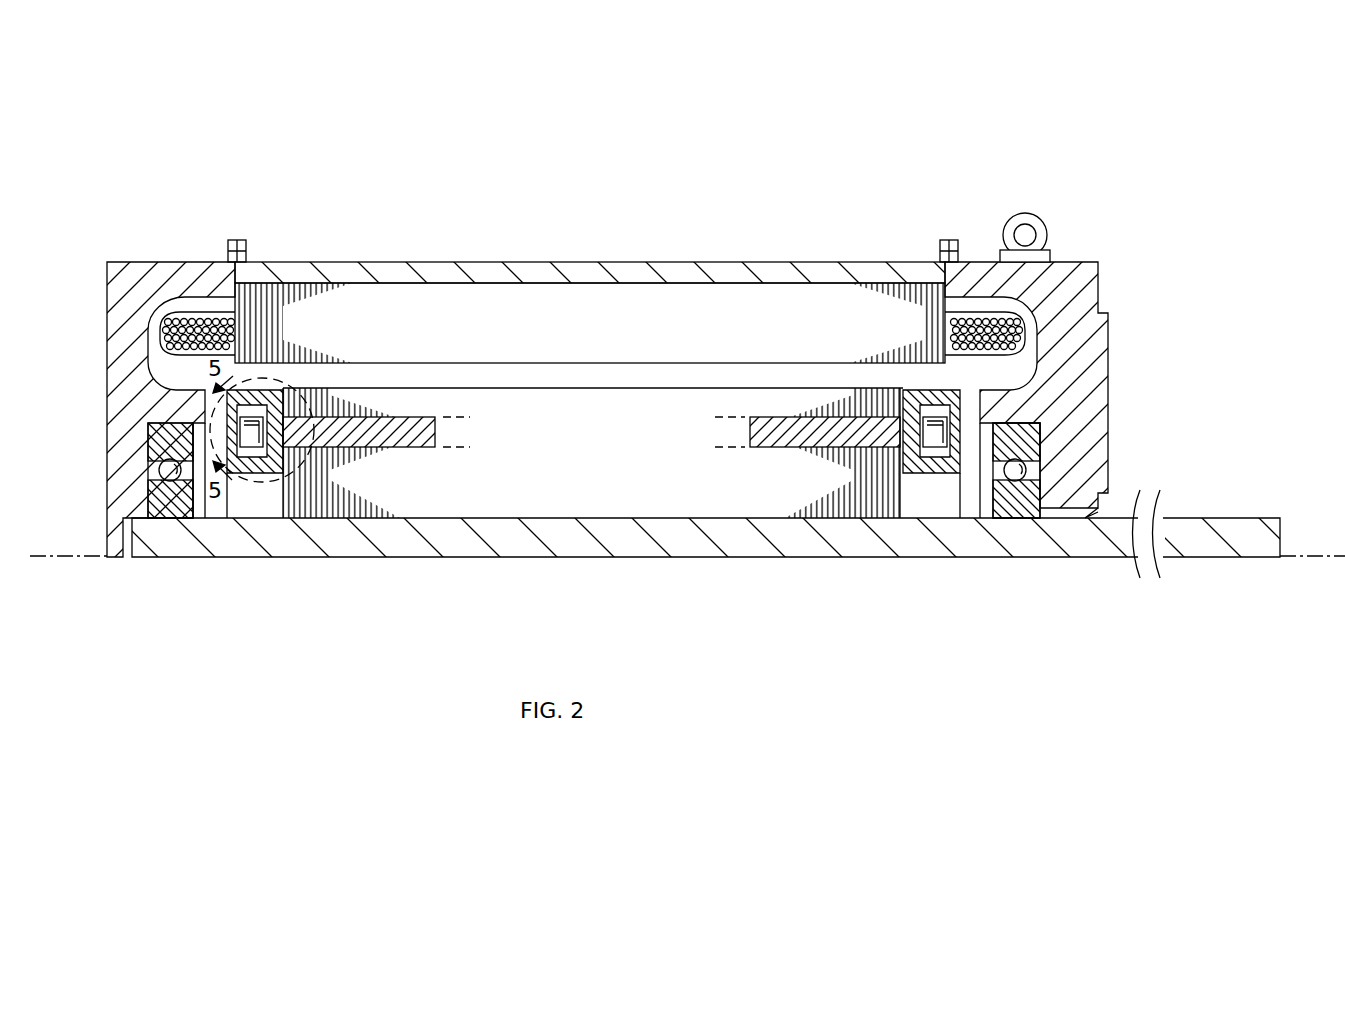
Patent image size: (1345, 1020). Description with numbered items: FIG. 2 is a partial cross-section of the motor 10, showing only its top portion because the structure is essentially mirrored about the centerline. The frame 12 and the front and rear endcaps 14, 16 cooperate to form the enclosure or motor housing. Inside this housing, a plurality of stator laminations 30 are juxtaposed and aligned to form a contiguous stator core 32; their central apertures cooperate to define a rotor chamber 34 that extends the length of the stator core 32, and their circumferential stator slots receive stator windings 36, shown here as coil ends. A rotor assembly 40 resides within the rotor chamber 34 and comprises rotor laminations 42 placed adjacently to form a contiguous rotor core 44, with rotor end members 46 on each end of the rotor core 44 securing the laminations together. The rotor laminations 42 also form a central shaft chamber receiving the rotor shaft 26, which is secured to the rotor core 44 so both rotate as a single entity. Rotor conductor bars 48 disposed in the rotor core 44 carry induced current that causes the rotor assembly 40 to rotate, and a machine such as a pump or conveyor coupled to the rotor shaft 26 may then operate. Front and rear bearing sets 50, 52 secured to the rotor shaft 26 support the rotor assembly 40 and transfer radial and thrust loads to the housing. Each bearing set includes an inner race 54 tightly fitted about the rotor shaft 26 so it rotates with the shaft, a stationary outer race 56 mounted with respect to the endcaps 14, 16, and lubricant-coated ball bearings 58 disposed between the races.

The motor 10 is at (503, 180).
The frame 12 is at (357, 262).
The front endcap 14 is at (1100, 262).
The rear endcap 16 is at (108, 260).
The rotor shaft 26 is at (1272, 547).
The stator laminations 30 is at (308, 283).
The stator core 32 is at (668, 315).
The rotor chamber 34 is at (937, 378).
The stator windings 36 is at (975, 313).
The rotor assembly 40 is at (468, 492).
The rotor laminations 42 is at (323, 452).
The rotor core 44 is at (660, 465).
The rotor end members 46 is at (250, 465).
The rotor conductor bars 48 is at (405, 415).
The front bearing set 50 is at (1040, 428).
The rear bearing set 52 is at (150, 468).
The inner race 54 is at (170, 518).
The outer race 56 is at (148, 432).
The ball bearings 58 is at (158, 470).